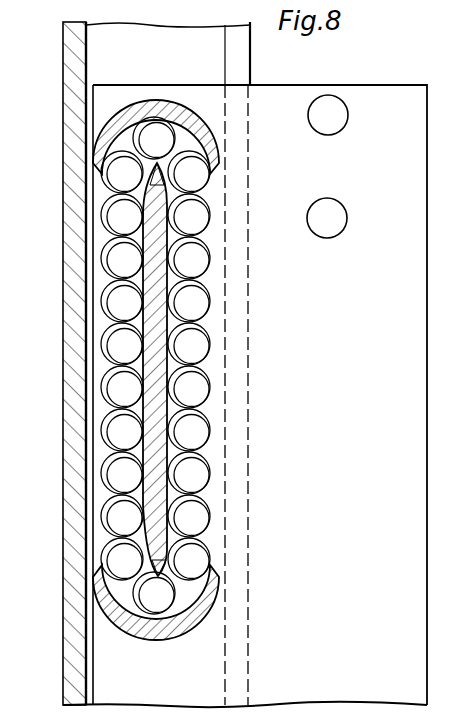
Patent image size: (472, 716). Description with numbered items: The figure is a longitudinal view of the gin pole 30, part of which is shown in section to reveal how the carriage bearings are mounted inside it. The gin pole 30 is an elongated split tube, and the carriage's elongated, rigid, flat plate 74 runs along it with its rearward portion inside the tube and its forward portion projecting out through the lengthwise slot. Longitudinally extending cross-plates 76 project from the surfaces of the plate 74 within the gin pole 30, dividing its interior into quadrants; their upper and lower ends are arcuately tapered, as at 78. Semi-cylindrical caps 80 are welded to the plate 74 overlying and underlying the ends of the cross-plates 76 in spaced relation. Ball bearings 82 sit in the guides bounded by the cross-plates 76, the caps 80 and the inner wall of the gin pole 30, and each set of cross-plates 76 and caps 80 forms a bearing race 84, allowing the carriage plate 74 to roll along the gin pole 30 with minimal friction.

The gin pole 30 is at (63, 222).
The plate 74 is at (357, 92).
The cross-plate 76 is at (157, 413).
The arcuately tapered end 78 is at (158, 165).
The semi-cylindrical cap 80 is at (158, 102).
The ball bearing 82 is at (205, 213).
The bearing race 84 is at (228, 304).